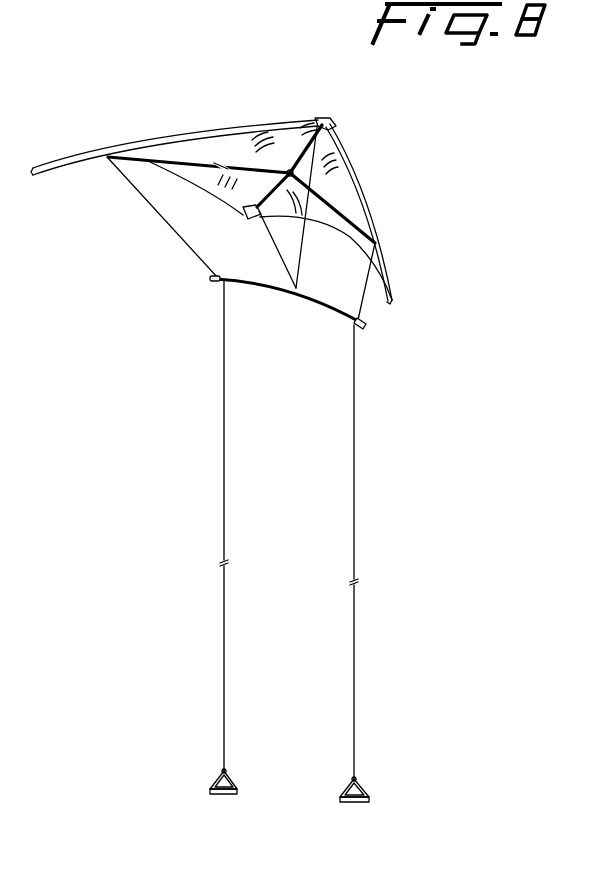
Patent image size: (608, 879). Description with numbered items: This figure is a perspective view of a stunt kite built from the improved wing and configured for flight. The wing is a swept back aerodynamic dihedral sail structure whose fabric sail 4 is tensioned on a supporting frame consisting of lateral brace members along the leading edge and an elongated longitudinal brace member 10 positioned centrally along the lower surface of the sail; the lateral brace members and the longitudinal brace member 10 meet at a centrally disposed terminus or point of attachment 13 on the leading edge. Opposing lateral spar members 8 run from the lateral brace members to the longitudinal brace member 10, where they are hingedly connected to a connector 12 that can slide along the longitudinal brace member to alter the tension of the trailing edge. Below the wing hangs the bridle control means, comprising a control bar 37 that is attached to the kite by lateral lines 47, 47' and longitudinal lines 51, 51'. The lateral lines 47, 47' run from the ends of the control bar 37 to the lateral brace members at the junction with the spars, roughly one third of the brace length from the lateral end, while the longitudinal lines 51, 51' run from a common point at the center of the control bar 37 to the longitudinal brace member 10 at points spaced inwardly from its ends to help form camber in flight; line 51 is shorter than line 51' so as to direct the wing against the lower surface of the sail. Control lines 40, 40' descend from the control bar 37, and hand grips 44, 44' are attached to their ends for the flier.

The fabric sail 4 is at (142, 140).
The lateral spar members 8 is at (227, 167).
The longitudinal brace member 10 is at (333, 133).
The connector 12 is at (295, 130).
The point of attachment 13 is at (333, 120).
The control bar 37 is at (322, 308).
The control line 40 is at (196, 526).
The control line 40' is at (387, 552).
The hand grip 44 is at (200, 815).
The hand grip 44' is at (392, 787).
The lateral line 47 is at (184, 205).
The lateral line 47' is at (347, 237).
The longitudinal line 51 is at (254, 249).
The longitudinal line 51' is at (323, 207).